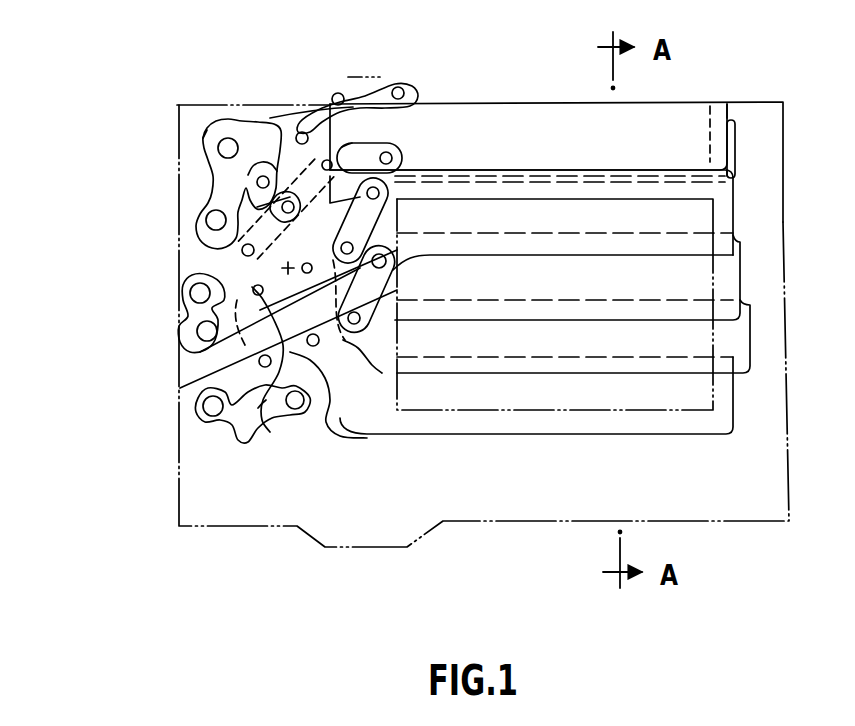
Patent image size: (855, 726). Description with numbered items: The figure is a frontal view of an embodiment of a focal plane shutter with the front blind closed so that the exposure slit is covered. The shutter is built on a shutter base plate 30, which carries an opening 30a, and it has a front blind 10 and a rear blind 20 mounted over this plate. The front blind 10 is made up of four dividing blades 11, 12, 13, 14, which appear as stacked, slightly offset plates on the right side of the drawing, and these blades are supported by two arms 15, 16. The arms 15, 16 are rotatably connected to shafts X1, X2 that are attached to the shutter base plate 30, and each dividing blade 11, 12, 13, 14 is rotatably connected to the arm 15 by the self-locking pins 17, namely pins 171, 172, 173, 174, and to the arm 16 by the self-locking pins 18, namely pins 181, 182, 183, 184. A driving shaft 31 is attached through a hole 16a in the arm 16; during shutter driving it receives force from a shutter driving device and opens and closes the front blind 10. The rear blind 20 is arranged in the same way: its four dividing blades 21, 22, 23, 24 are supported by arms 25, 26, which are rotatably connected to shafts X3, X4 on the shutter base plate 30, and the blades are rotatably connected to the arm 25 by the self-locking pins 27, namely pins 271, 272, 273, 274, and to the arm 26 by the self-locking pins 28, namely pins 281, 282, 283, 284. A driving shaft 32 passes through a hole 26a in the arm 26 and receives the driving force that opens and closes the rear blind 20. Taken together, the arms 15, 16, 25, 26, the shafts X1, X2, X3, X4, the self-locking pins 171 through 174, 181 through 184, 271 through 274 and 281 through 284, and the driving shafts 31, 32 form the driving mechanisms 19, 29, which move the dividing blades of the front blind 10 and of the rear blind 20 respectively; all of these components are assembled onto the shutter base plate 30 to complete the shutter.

The front blind 10 is at (566, 450).
The dividing blade 11 is at (735, 207).
The dividing blade 12 is at (742, 270).
The dividing blade 13 is at (752, 337).
The dividing blade 14 is at (742, 400).
The arm 15 is at (195, 348).
The arm 16 is at (233, 430).
The hole 16a is at (293, 412).
The self-locking pins 17 is at (360, 220).
The self-locking pin 171 is at (380, 197).
The self-locking pin 172 is at (354, 250).
The self-locking pin 173 is at (398, 374).
The self-locking pin 174 is at (262, 405).
The self-locking pins 18 is at (366, 289).
The self-locking pin 181 is at (386, 265).
The self-locking pin 182 is at (360, 318).
The self-locking pin 183 is at (334, 375).
The self-locking pin 184 is at (259, 361).
The driving mechanism 19 is at (213, 444).
The rear blind 20 is at (537, 84).
The dividing blade 21 is at (720, 110).
The dividing blade 22 is at (738, 140).
The dividing blade 23 is at (742, 168).
The dividing blade 24 is at (731, 112).
The arm 25 is at (187, 272).
The arm 26 is at (242, 121).
The hole 26a is at (227, 138).
The self-locking pins 27 is at (321, 201).
The self-locking pin 271 is at (395, 159).
The self-locking pin 272 is at (345, 142).
The self-locking pin 273 is at (282, 207).
The self-locking pin 274 is at (242, 250).
The self-locking pins 28 is at (344, 105).
The self-locking pin 281 is at (403, 88).
The self-locking pin 282 is at (338, 92).
The self-locking pin 283 is at (302, 132).
The self-locking pin 284 is at (257, 180).
The driving mechanism 29 is at (160, 75).
The shutter base plate 30 is at (497, 526).
The housing opening 30a is at (639, 412).
The driving shaft 31 is at (340, 425).
The driving shaft 32 is at (203, 138).
The shaft X1 is at (197, 331).
The shaft X2 is at (203, 406).
The shaft X3 is at (190, 293).
The shaft X4 is at (205, 217).